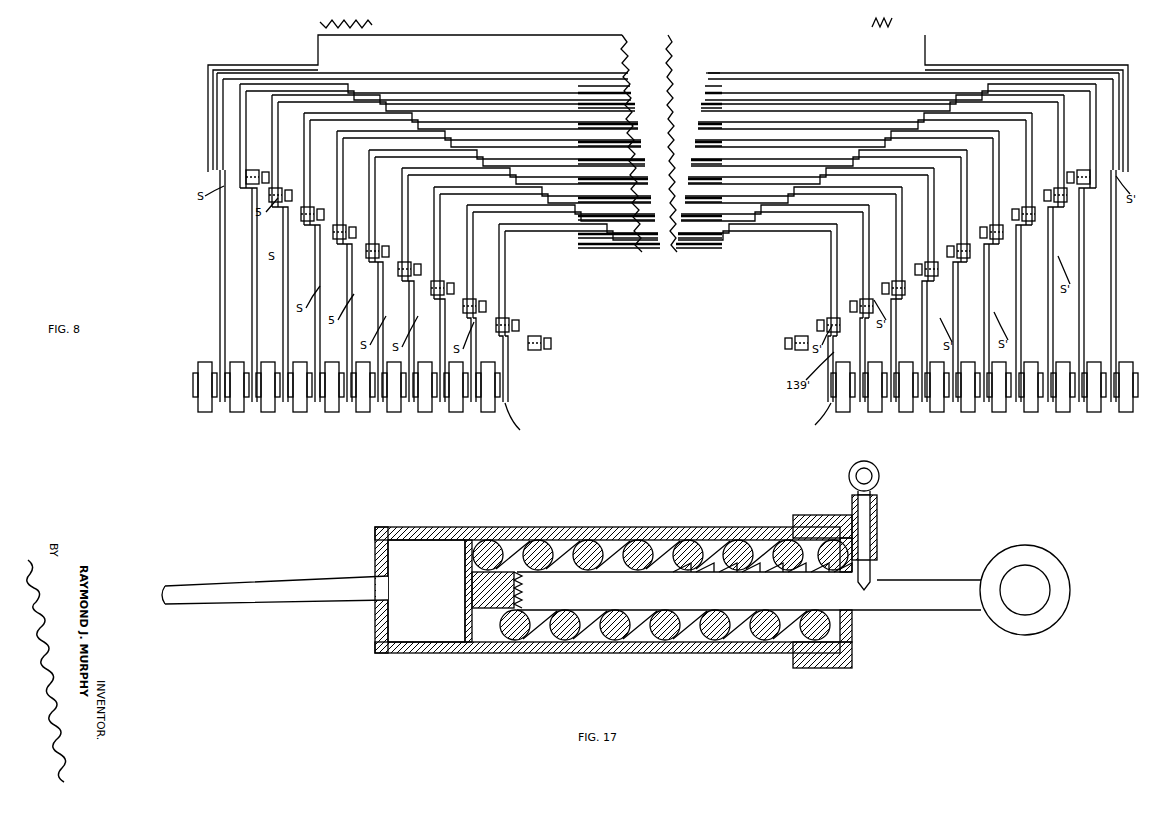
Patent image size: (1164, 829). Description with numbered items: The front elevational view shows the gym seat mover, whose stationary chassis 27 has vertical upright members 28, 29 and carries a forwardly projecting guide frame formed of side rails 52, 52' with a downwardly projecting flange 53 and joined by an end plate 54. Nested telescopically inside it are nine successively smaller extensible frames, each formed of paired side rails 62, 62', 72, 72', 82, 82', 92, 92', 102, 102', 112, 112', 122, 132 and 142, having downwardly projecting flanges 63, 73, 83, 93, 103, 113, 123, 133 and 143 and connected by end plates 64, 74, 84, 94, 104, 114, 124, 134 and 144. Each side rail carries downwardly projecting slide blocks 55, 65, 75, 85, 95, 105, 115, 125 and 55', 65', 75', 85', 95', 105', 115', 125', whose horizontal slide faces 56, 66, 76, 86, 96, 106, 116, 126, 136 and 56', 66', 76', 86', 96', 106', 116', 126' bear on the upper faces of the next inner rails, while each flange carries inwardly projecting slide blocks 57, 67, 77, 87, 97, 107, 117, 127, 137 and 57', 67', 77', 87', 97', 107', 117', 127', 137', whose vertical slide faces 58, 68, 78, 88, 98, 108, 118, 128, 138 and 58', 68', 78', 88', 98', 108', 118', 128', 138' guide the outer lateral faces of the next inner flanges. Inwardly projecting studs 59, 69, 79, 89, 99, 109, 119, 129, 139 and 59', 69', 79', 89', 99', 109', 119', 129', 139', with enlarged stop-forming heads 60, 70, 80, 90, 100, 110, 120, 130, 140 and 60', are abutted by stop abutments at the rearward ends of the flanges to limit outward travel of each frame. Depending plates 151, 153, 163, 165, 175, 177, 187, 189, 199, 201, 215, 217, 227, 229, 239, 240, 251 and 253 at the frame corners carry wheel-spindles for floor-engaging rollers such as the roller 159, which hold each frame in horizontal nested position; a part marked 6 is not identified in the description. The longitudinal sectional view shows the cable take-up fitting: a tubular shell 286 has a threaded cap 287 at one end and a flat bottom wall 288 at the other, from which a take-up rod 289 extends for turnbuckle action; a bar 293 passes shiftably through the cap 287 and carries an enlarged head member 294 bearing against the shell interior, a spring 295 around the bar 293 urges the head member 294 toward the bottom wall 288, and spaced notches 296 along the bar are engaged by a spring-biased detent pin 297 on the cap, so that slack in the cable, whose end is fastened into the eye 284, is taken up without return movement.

In FIG. 8, the break line 27 is at (628, 48).
In FIG. 8, the break connector 28 is at (872, 27).
In FIG. 8, the break connector 29 is at (372, 25).
In FIG. 8, the frame member 52 is at (422, 106).
In FIG. 8, the frame member 62 is at (435, 115).
In FIG. 8, the frame member 72 is at (453, 124).
In FIG. 8, the frame member 82 is at (471, 133).
In FIG. 8, the frame member 92 is at (489, 145).
In FIG. 8, the frame member 102 is at (507, 154).
In FIG. 8, the frame member 112 is at (525, 163).
In FIG. 8, the frame member 122 is at (538, 199).
In FIG. 8, the frame member 132 is at (570, 217).
In FIG. 8, the frame member 142 is at (600, 240).
In FIG. 8, the frame member 52' is at (913, 105).
In FIG. 8, the frame member 62' is at (900, 114).
In FIG. 8, the frame member 72' is at (882, 123).
In FIG. 8, the frame member 82' is at (865, 132).
In FIG. 8, the frame member 92' is at (847, 142).
In FIG. 8, the frame member 102' is at (829, 147).
In FIG. 8, the bar 54 is at (706, 78).
In FIG. 8, the bar 64 is at (712, 97).
In FIG. 8, the bar 74 is at (720, 108).
In FIG. 8, the bar 84 is at (728, 126).
In FIG. 8, the bar 94 is at (738, 144).
In FIG. 8, the bar 104 is at (748, 163).
In FIG. 8, the bar 114 is at (760, 181).
In FIG. 8, the housing 53 is at (208, 172).
In FIG. 8, the broken bar ends 144 is at (662, 254).
In FIG. 8, the latch 59 is at (223, 279).
In FIG. 8, the latch 69 is at (239, 295).
In FIG. 8, the latch 79 is at (298, 284).
In FIG. 8, the latch 89 is at (322, 309).
In FIG. 8, the latch 99 is at (363, 304).
In FIG. 8, the latch 109 is at (395, 311).
In FIG. 8, the latch 119 is at (428, 320).
In FIG. 8, the latch 129 is at (460, 325).
In FIG. 8, the latch 139 is at (477, 357).
In FIG. 8, the latch 140 is at (506, 314).
In FIG. 8, the latch 59' is at (1105, 273).
In FIG. 8, the latch 69' is at (1076, 295).
In FIG. 8, the latch 79' is at (1044, 304).
In FIG. 8, the latch 89' is at (1011, 313).
In FIG. 8, the latch 99' is at (973, 323).
In FIG. 8, the latch 109' is at (941, 332).
In FIG. 8, the latch 119' is at (908, 341).
In FIG. 8, the latch 129' is at (876, 327).
In FIG. 8, the latch 139' is at (835, 357).
In FIG. 8, the latch 138' is at (811, 332).
In FIG. 8, the spool 151 is at (222, 403).
In FIG. 8, the spool 163 is at (254, 403).
In FIG. 8, the spool 175 is at (285, 403).
In FIG. 8, the spool 187 is at (317, 403).
In FIG. 8, the spool 199 is at (349, 403).
In FIG. 8, the spool 215 is at (380, 403).
In FIG. 8, the spool 227 is at (411, 403).
In FIG. 8, the spool 239 is at (442, 403).
In FIG. 8, the spool 251 is at (473, 403).
In FIG. 8, the spool 143 is at (508, 336).
In FIG. 8, the spool 133 is at (500, 345).
In FIG. 8, the spool 153 is at (1114, 403).
In FIG. 8, the spool 165 is at (1082, 403).
In FIG. 8, the spool 177 is at (1051, 403).
In FIG. 8, the spool 189 is at (1019, 403).
In FIG. 8, the spool 201 is at (987, 403).
In FIG. 8, the spool 217 is at (956, 403).
In FIG. 8, the spool 229 is at (925, 403).
In FIG. 8, the spool 240 is at (894, 403).
In FIG. 8, the spool 253 is at (863, 403).
In FIG. 8, the stop 55 is at (258, 86).
In FIG. 8, the slot 56 is at (257, 104).
In FIG. 8, the slot 57 is at (226, 106).
In FIG. 8, the stop 65 is at (288, 103).
In FIG. 8, the slot 66 is at (291, 124).
In FIG. 8, the slot 67 is at (259, 125).
In FIG. 8, the stop 75 is at (318, 123).
In FIG. 8, the slot 76 is at (322, 146).
In FIG. 8, the slot 77 is at (291, 146).
In FIG. 8, the stop 85 is at (353, 140).
In FIG. 8, the slot 86 is at (354, 162).
In FIG. 8, the slot 87 is at (326, 194).
In FIG. 8, the stop 95 is at (385, 160).
In FIG. 8, the slot 96 is at (386, 177).
In FIG. 8, the slot 97 is at (353, 195).
In FIG. 8, the stop 105 is at (420, 178).
In FIG. 8, the slot 106 is at (420, 195).
In FIG. 8, the slot 107 is at (389, 210).
In FIG. 8, the stop 115 is at (450, 197).
In FIG. 8, the slot 116 is at (450, 213).
In FIG. 8, the slot 117 is at (419, 230).
In FIG. 8, the stop 125 is at (512, 237).
In FIG. 8, the slot 126 is at (483, 241).
In FIG. 8, the slot 127 is at (451, 239).
In FIG. 8, the pin 128 is at (430, 265).
In FIG. 8, the pin 136 is at (502, 252).
In FIG. 8, the slot 137 is at (490, 256).
In FIG. 8, the pin 138 is at (526, 264).
In FIG. 8, the pin 159 is at (506, 282).
In FIG. 8, the spring 6 is at (510, 302).
In FIG. 8, the bar 124 is at (730, 204).
In FIG. 8, the bar 134 is at (723, 222).
In FIG. 8, the lever 58 is at (203, 94).
In FIG. 8, the lever 68 is at (220, 126).
In FIG. 8, the lever 78 is at (220, 150).
In FIG. 8, the pin 60 is at (204, 182).
In FIG. 8, the pin 63 is at (248, 196).
In FIG. 8, the pin 70 is at (256, 192).
In FIG. 8, the pin 80 is at (288, 212).
In FIG. 8, the pin 73 is at (262, 206).
In FIG. 8, the lever 88 is at (296, 246).
In FIG. 8, the lever 98 is at (330, 263).
In FIG. 8, the pin 83 is at (316, 258).
In FIG. 8, the pin 90 is at (320, 262).
In FIG. 8, the pin 93 is at (350, 270).
In FIG. 8, the pin 100 is at (356, 275).
In FIG. 8, the lever 108 is at (364, 282).
In FIG. 8, the pin 103 is at (388, 284).
In FIG. 8, the pin 110 is at (392, 290).
In FIG. 8, the lever 118 is at (403, 288).
In FIG. 8, the pin 113 is at (420, 292).
In FIG. 8, the pin 120 is at (424, 300).
In FIG. 8, the pin 123 is at (452, 298).
In FIG. 8, the pin 130 is at (456, 304).
In FIG. 8, the stop 55' is at (1069, 84).
In FIG. 8, the slot 56' is at (1070, 99).
In FIG. 8, the slot 57' is at (1101, 99).
In FIG. 8, the stop 65' is at (1042, 103).
In FIG. 8, the slot 66' is at (1043, 118).
In FIG. 8, the slot 67' is at (1071, 120).
In FIG. 8, the stop 75' is at (1012, 123).
In FIG. 8, the slot 76' is at (1012, 138).
In FIG. 8, the slot 77' is at (1043, 140).
In FIG. 8, the stop 85' is at (975, 141).
In FIG. 8, the slot 86' is at (975, 158).
In FIG. 8, the slot 87' is at (1009, 168).
In FIG. 8, the stop 95' is at (942, 160).
In FIG. 8, the slot 96' is at (945, 178).
In FIG. 8, the slot 97' is at (975, 190).
In FIG. 8, the stop 105' is at (914, 178).
In FIG. 8, the slot 106' is at (917, 192).
In FIG. 8, the slot 107' is at (949, 209).
In FIG. 8, the stop 115' is at (886, 197).
In FIG. 8, the slot 116' is at (887, 213).
In FIG. 8, the slot 117' is at (919, 229).
In FIG. 8, the stop 125' is at (851, 223).
In FIG. 8, the slot 126' is at (823, 238).
In FIG. 8, the slot 127' is at (884, 240).
In FIG. 8, the pin 128' is at (862, 280).
In FIG. 8, the slot 137' is at (857, 255).
In FIG. 8, the lever 118' is at (905, 307).
In FIG. 8, the lever 108' is at (951, 306).
In FIG. 8, the lever 98' is at (983, 292).
In FIG. 8, the lever 88' is at (1006, 295).
In FIG. 8, the lever 78' is at (1034, 235).
In FIG. 8, the lever 68' is at (1072, 200).
In FIG. 8, the lever 58' is at (1099, 187).
In FIG. 8, the pin 60' is at (1125, 177).
In FIG. 8, the frame members 112' is at (751, 270).
In FIG. 17, the cylinder 286 is at (430, 655).
In FIG. 17, the rod 289 is at (246, 606).
In FIG. 17, the piston 288 is at (392, 622).
In FIG. 17, the piston head 294 is at (470, 642).
In FIG. 17, the rod 293 is at (928, 616).
In FIG. 17, the ratchet teeth 296 is at (716, 570).
In FIG. 17, the spring 295 is at (668, 642).
In FIG. 17, the end cap 287 is at (824, 668).
In FIG. 17, the pawl 297 is at (878, 565).
In FIG. 17, the eye 284 is at (1028, 632).